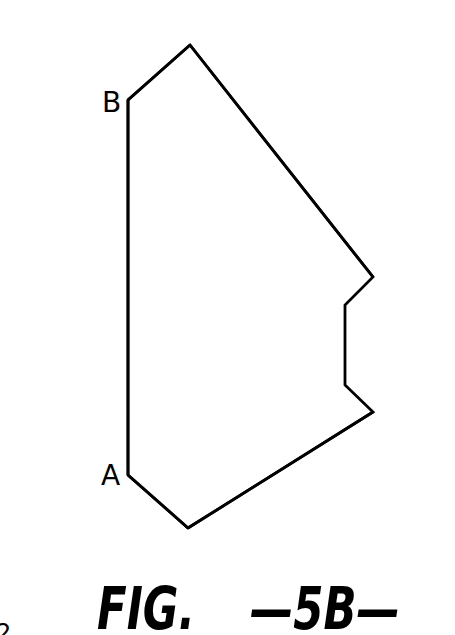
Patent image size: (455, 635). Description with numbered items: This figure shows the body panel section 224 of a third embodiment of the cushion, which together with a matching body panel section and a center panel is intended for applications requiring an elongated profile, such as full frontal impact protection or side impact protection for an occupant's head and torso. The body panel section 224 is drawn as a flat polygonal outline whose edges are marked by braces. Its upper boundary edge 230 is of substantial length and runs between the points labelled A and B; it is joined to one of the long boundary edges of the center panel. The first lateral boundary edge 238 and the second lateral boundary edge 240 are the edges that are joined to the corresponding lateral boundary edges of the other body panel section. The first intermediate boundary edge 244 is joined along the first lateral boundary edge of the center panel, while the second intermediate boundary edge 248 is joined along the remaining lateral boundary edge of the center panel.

The body panel section 224 is at (266, 323).
The upper boundary edge 230 is at (88, 102).
The second lateral boundary edge 240 is at (212, 27).
The first intermediate boundary edge 244 is at (167, 552).
The second intermediate boundary edge 248 is at (170, 25).
The first lateral boundary edge 238 is at (388, 433).